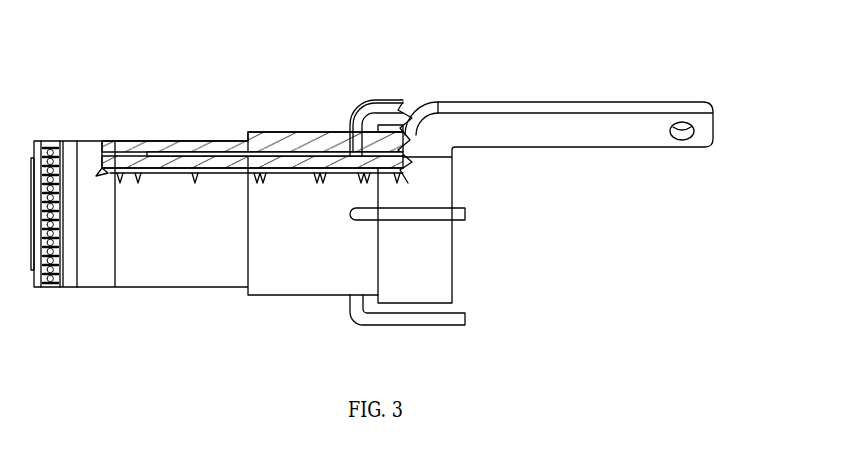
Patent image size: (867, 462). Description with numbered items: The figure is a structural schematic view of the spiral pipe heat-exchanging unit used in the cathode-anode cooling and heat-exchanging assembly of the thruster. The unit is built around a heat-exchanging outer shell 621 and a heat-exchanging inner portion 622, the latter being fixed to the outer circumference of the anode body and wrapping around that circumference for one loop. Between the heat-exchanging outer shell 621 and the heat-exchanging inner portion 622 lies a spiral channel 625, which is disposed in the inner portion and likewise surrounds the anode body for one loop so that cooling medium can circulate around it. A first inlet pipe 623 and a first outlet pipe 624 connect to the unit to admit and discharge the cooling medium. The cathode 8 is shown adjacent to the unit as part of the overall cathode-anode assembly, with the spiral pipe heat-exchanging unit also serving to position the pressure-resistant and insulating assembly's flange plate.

The cathode 8 is at (435, 272).
The heat-exchanging outer shell 621 is at (163, 148).
The heat-exchanging inner portion 622 is at (198, 160).
The first inlet pipe 623 is at (387, 108).
The first outlet pipe 624 is at (53, 267).
The spiral channel 625 is at (412, 318).